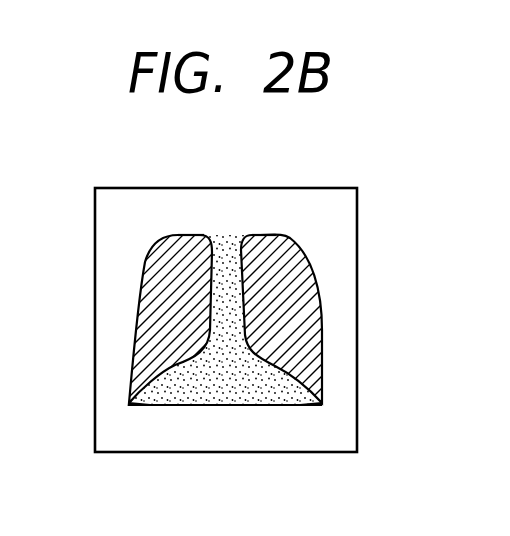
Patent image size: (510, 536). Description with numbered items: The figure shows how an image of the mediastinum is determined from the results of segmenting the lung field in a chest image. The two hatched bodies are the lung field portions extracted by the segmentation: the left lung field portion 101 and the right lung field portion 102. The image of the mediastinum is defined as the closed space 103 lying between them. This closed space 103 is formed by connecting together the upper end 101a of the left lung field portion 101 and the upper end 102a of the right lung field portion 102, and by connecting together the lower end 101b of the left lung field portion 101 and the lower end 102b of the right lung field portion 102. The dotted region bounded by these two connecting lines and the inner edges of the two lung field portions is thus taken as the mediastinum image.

The left lung field portion 101 is at (146, 298).
The upper end of the left lung field portion 101a is at (193, 235).
The lower end of the left lung field portion 101b is at (128, 407).
The right lung field portion 102 is at (300, 300).
The upper end of the right lung field portion 102a is at (265, 235).
The lower end of the right lung field portion 102b is at (318, 407).
The closed space 103 is at (223, 397).